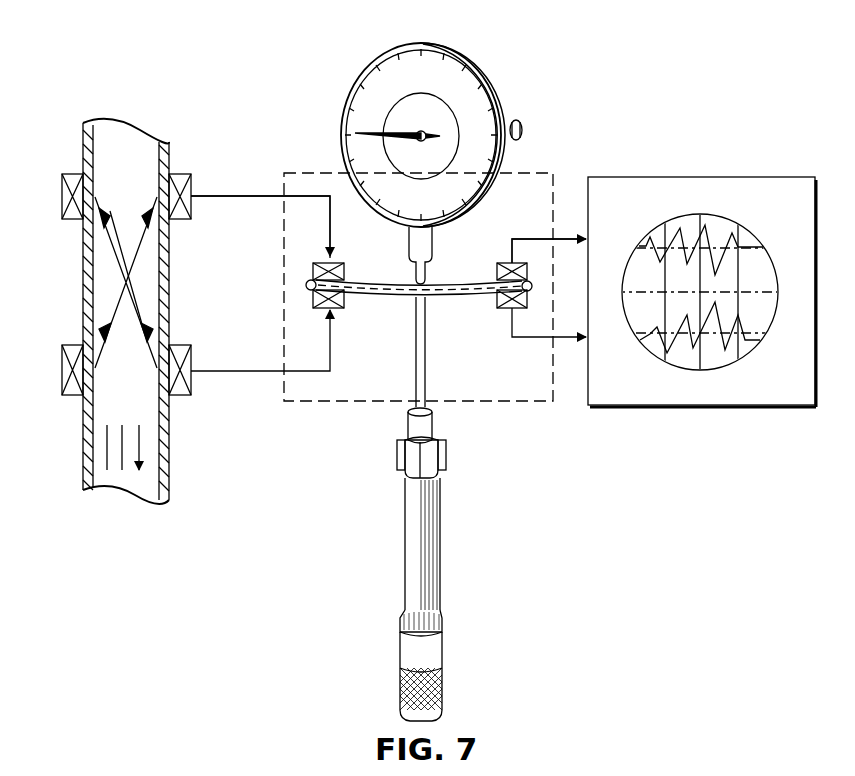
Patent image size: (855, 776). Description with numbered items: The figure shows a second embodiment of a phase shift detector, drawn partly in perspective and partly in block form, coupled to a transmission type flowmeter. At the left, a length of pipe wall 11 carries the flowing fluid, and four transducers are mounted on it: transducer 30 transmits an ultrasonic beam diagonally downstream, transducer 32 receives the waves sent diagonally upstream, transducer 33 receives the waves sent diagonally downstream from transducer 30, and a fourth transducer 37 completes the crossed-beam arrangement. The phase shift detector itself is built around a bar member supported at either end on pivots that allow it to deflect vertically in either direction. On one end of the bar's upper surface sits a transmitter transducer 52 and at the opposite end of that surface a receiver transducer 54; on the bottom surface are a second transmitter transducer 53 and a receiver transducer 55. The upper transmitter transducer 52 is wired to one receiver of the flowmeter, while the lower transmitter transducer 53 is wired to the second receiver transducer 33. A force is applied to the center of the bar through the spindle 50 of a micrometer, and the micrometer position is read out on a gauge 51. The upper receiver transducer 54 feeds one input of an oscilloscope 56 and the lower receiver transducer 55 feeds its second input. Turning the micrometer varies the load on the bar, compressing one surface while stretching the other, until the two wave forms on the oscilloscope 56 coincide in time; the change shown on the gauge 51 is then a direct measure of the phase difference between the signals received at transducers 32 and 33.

The pipe wall 11 is at (82, 140).
The transducer 30 is at (72, 219).
The transducer 32 is at (184, 219).
The transducer 33 is at (184, 395).
The ultrasonic transducer 37 is at (70, 395).
The spindle 50 is at (425, 364).
The gauge 51 is at (488, 84).
The transmitter transducer 52 is at (342, 266).
The transmitter transducer 53 is at (337, 308).
The receiver transducer 54 is at (505, 263).
The receiver transducer 55 is at (503, 308).
The oscilloscope 56 is at (640, 177).